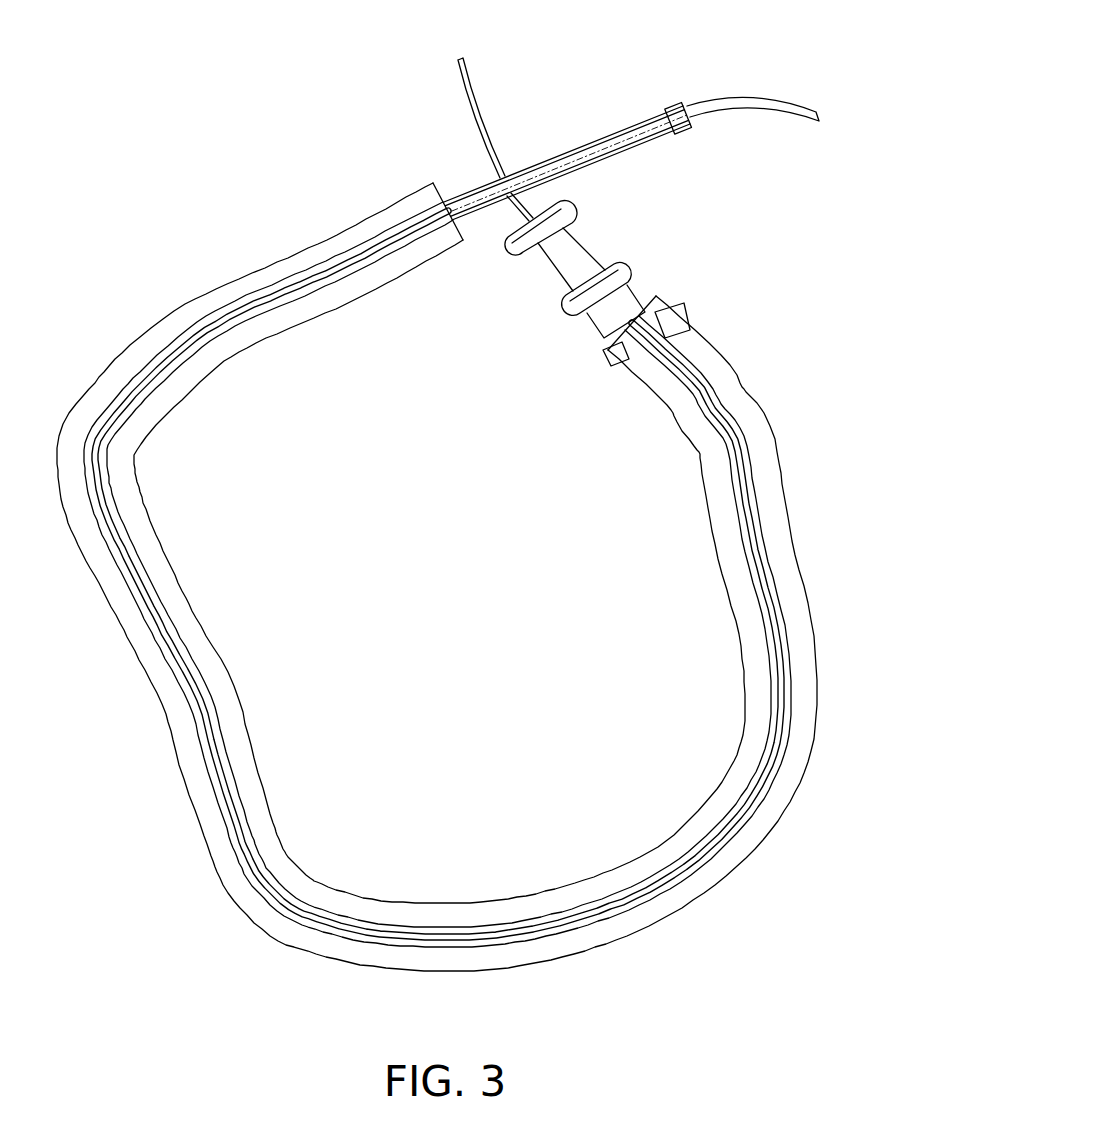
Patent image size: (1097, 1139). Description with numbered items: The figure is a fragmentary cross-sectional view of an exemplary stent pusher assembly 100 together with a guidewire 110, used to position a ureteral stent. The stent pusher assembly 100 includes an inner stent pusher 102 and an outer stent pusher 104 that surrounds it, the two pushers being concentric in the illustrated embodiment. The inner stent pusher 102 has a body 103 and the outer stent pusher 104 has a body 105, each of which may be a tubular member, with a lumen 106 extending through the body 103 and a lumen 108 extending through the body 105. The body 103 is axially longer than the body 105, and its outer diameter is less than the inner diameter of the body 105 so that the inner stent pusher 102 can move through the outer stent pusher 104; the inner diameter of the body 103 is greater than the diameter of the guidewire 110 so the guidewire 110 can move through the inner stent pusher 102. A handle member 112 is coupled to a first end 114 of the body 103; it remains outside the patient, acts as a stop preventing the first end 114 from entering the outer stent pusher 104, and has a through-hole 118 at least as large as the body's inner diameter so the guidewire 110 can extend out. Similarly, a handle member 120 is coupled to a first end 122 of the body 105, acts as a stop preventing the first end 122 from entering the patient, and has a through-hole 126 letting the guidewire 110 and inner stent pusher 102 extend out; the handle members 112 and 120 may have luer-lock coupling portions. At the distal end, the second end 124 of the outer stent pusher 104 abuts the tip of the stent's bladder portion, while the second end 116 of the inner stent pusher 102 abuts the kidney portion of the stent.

The stent pusher assembly 100 is at (222, 217).
The inner stent pusher 102 is at (480, 215).
The body of inner stent pusher 103 is at (567, 150).
The outer stent pusher 104 is at (257, 790).
The body of outer stent pusher 105 is at (165, 708).
The lumen 106 is at (694, 102).
The lumen 108 is at (447, 198).
The guidewire 110 is at (777, 176).
The handle member 112 is at (641, 283).
The first end 114 is at (610, 342).
The second end 116 is at (648, 112).
The through-hole 118 is at (510, 245).
The handle member 120 is at (690, 322).
The first end 122 is at (627, 366).
The second end 124 is at (439, 180).
The through-hole 126 is at (668, 300).